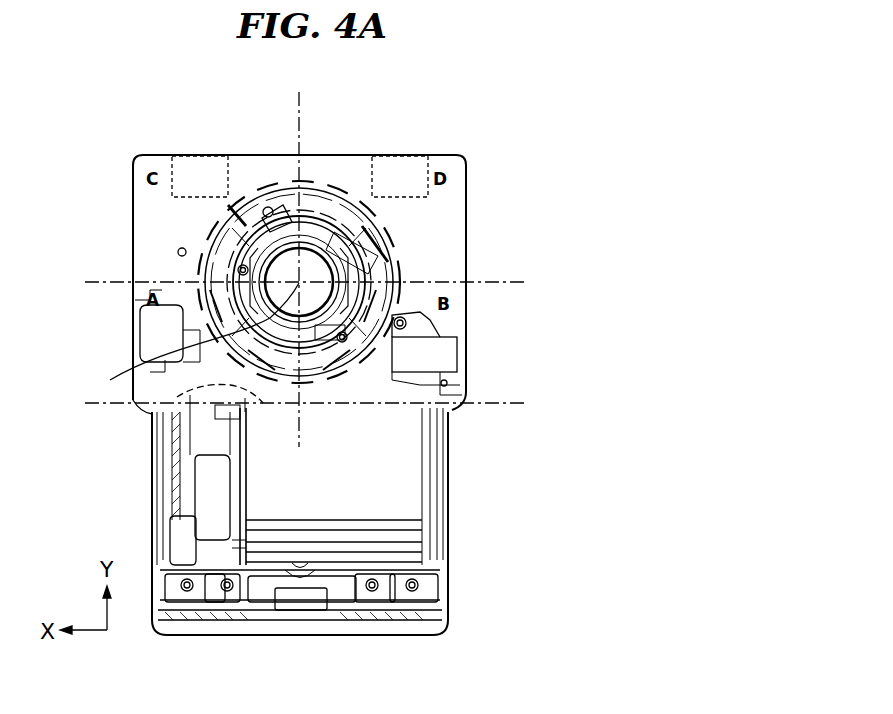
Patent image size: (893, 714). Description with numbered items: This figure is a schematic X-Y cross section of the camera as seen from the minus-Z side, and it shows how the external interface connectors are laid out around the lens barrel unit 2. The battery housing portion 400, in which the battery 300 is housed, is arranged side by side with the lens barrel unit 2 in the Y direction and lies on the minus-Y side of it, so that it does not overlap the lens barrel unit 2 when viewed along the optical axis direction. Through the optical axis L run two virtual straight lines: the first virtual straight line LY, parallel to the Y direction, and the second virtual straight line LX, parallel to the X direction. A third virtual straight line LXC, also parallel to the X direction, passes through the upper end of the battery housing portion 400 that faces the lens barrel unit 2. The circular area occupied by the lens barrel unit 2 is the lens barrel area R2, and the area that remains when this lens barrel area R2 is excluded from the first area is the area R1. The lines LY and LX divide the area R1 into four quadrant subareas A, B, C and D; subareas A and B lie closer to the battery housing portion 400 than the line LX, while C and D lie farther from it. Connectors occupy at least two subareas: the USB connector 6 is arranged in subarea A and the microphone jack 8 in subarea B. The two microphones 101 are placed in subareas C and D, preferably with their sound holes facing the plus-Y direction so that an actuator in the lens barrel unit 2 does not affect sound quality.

The microphones 101 is at (197, 165).
The area R1 is at (467, 207).
The lens barrel area R2 is at (215, 227).
The lens barrel unit 2 is at (365, 262).
The USB connector 6 is at (153, 340).
The microphone jack 8 is at (447, 353).
The battery housing portion 400 is at (230, 390).
The battery 300 is at (417, 503).
The optical axis L is at (195, 341).
The second virtual straight line LX is at (322, 281).
The first virtual straight line LY is at (301, 256).
The third virtual straight line LXC is at (331, 402).